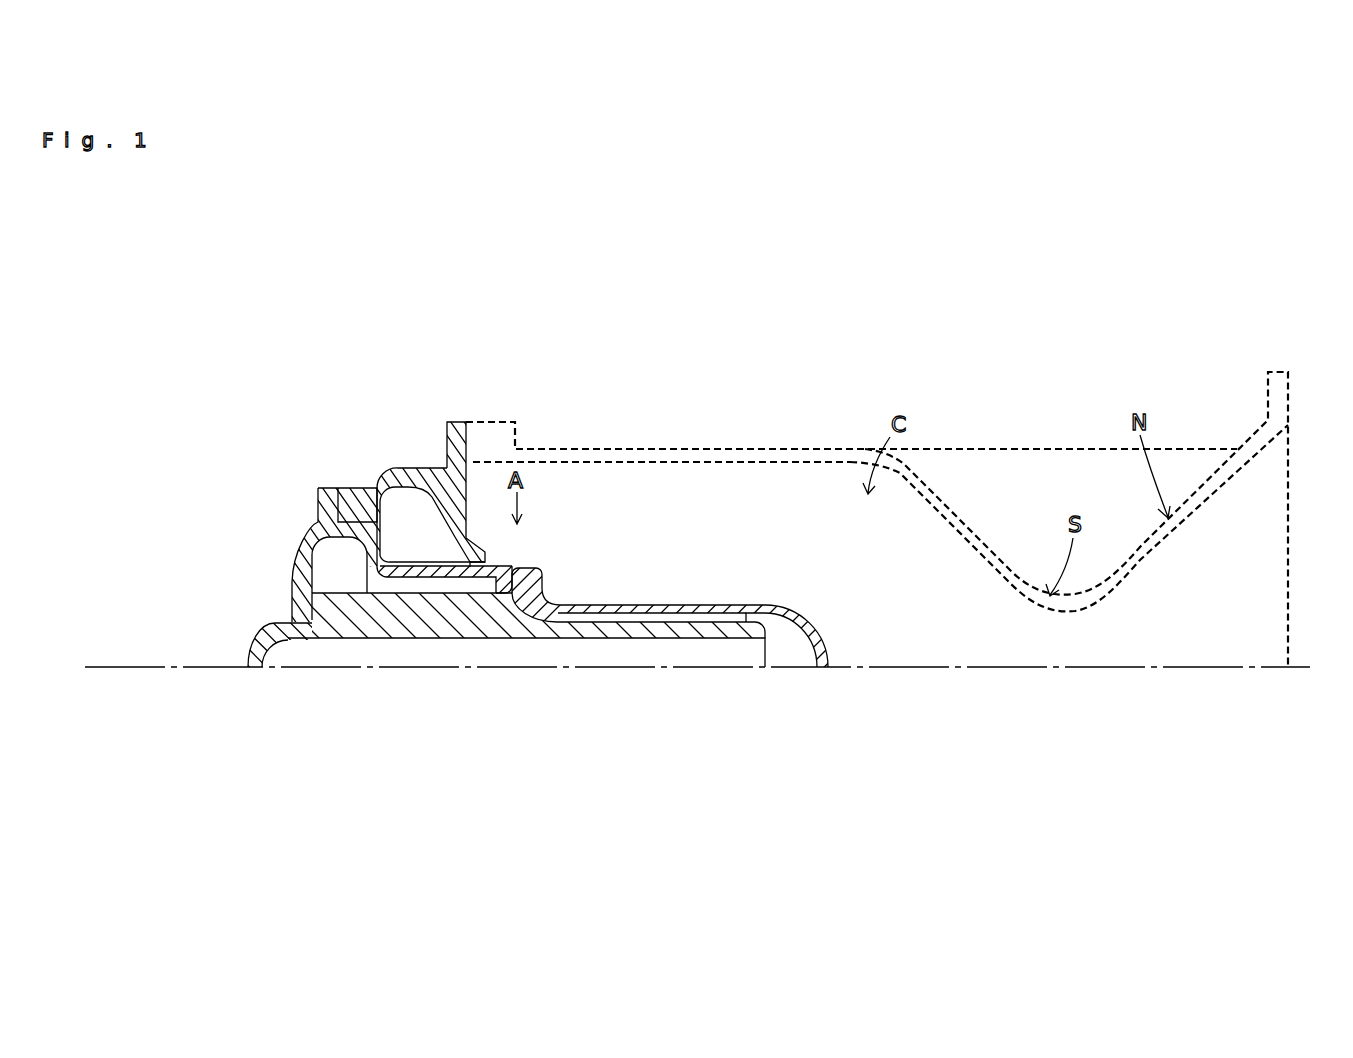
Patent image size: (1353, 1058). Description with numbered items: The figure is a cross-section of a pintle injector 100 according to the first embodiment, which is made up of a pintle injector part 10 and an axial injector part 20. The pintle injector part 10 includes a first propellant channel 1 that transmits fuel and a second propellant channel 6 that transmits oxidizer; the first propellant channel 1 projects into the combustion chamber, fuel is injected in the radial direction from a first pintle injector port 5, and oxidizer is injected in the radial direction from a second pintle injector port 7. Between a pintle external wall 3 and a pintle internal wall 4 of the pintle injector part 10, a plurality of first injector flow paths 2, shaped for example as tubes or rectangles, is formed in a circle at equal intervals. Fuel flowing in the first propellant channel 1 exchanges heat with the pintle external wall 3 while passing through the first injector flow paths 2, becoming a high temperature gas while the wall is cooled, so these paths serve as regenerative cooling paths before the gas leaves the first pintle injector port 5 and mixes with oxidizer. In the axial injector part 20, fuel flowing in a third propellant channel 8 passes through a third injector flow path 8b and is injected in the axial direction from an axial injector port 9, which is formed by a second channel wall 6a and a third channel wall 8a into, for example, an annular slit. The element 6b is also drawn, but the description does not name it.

The first propellant channel 1 is at (592, 652).
The first injector flow paths 2 is at (607, 617).
The pintle external wall 3 is at (752, 603).
The pintle internal wall 4 is at (457, 617).
The first pintle injector port 5 is at (532, 567).
The second propellant channel 6 is at (335, 568).
The second channel wall 6a is at (460, 573).
The encoder magnetic body 6b is at (423, 588).
The second pintle injector port 7 is at (488, 564).
The third propellant channel 8 is at (400, 550).
The third channel wall 8a is at (390, 482).
The third injector flow path 8b is at (470, 560).
The axial injector port 9 is at (500, 566).
The pintle injector part 10 is at (268, 612).
The axial injector part 20 is at (433, 457).
The pintle injector 100 is at (690, 323).